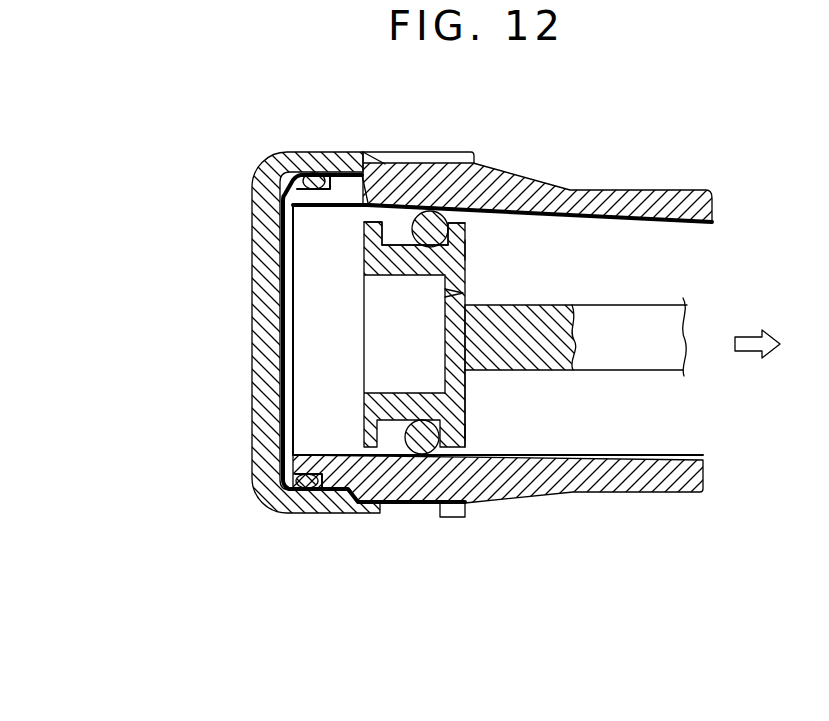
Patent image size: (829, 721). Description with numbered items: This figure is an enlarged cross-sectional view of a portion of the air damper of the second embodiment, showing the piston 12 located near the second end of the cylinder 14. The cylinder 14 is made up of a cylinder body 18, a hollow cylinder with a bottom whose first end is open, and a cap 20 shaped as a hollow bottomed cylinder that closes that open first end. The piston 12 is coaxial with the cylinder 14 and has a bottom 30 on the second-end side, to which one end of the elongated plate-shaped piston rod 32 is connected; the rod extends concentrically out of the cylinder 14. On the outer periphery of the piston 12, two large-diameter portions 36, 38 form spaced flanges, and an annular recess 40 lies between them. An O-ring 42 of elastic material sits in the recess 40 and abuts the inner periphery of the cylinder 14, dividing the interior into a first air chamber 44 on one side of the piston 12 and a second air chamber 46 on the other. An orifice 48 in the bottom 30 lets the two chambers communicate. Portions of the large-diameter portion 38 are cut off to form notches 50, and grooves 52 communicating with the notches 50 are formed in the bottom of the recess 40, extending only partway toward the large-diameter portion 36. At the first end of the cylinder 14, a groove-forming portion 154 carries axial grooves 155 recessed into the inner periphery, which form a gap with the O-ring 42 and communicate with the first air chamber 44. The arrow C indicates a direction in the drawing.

The cylinder 14 is at (458, 429).
The cap 20 is at (245, 447).
The cylinder body 18 is at (573, 491).
The O-ring 42 is at (437, 222).
The grooves 155 is at (348, 210).
The groove-forming portion 154 is at (322, 447).
The first air chamber 44 is at (344, 352).
The second air chamber 46 is at (633, 297).
The bottom 30 is at (467, 277).
The large-diameter portion 36 is at (372, 242).
The large-diameter portion 38 is at (467, 237).
The annular recess 40 is at (398, 237).
The orifice 48 is at (447, 291).
The piston 12 is at (463, 388).
The notches 50 is at (467, 248).
The grooves 52 is at (428, 250).
The piston rod 32 is at (643, 362).
The direction arrow C is at (752, 351).